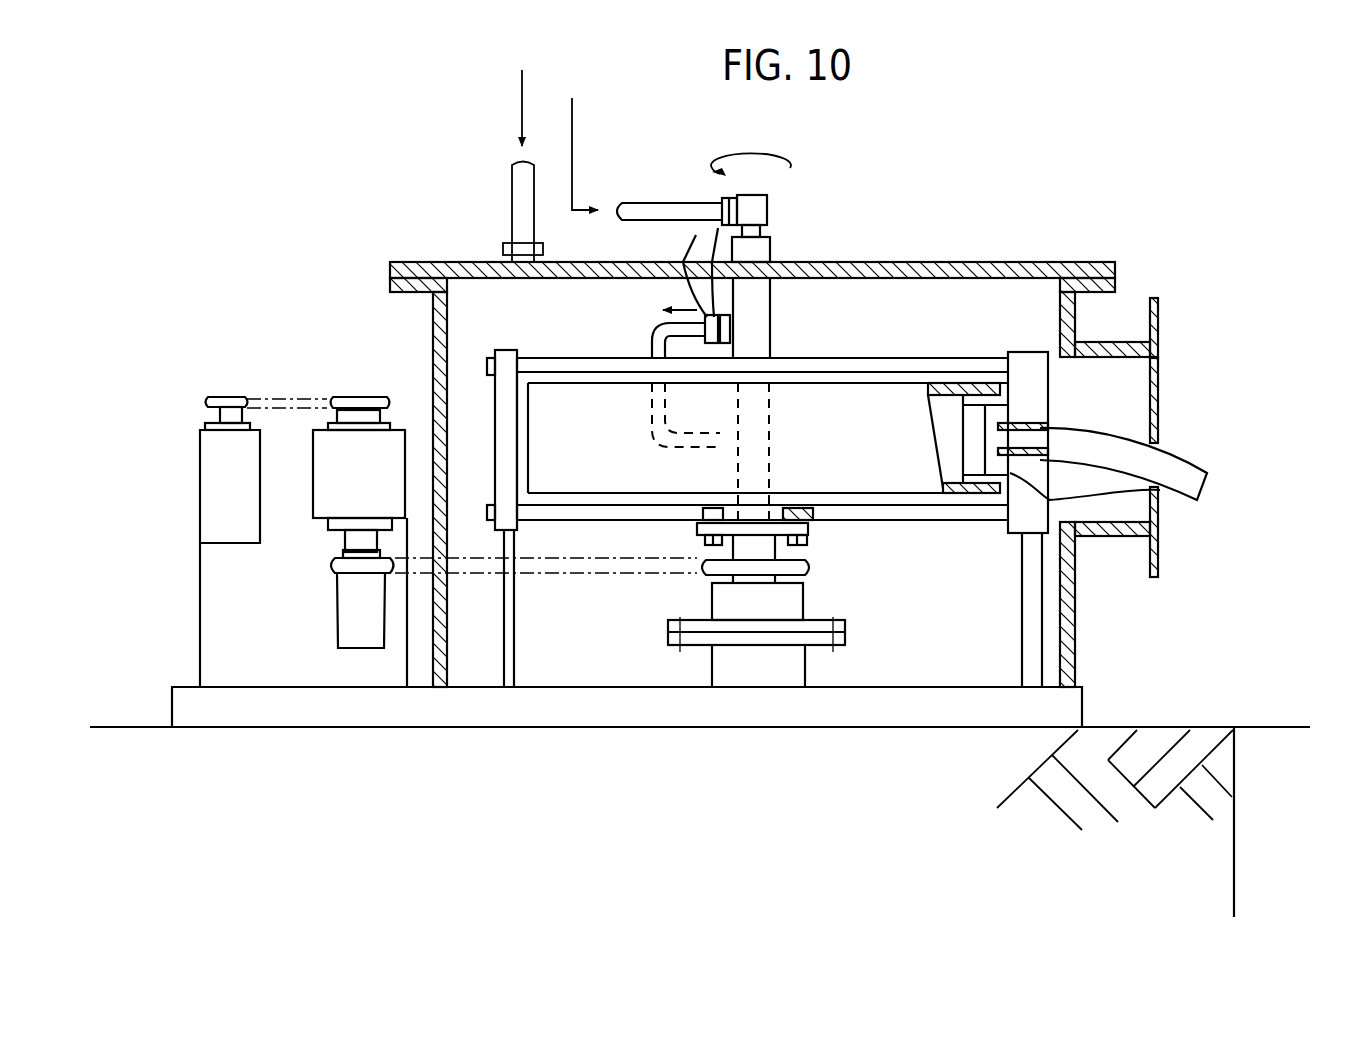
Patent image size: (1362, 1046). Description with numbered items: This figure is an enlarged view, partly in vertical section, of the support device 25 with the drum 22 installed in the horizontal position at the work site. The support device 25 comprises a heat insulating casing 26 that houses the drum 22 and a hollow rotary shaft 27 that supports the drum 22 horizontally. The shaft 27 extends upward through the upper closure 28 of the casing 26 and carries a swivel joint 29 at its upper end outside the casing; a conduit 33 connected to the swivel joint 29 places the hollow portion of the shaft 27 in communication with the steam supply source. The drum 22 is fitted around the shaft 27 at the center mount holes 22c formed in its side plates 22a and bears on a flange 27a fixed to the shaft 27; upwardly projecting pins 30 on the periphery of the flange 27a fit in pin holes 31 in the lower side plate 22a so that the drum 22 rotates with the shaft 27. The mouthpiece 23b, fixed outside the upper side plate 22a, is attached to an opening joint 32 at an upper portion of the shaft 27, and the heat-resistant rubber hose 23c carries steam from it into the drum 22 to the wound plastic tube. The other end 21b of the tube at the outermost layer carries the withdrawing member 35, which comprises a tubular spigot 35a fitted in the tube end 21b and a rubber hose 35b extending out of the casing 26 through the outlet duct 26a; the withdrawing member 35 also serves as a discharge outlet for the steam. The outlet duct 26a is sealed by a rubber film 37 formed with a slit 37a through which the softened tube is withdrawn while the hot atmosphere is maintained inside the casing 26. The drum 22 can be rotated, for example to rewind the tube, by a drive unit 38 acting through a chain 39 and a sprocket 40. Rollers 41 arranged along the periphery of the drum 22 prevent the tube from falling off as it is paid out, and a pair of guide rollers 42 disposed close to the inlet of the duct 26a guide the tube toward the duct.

The other end of the plastic tube 21b is at (936, 360).
The drum 22 is at (620, 520).
The drum side plate 22a is at (980, 513).
The center mount hole 22c is at (772, 368).
The mouthpiece 23b is at (652, 265).
The heat-resistant rubber hose 23c is at (652, 333).
The support device 25 is at (757, 657).
The heat insulating casing 26 is at (437, 345).
The outlet duct 26a is at (1120, 537).
The hollow rotary shaft 27 is at (772, 242).
The flange 27a is at (800, 568).
The upper closure 28 is at (1003, 262).
The swivel joint 29 is at (768, 210).
The pins 30 is at (790, 538).
The pin holes 31 is at (810, 516).
The opening joint 32 is at (718, 226).
The conduit 33 is at (628, 203).
The withdrawing member 35 is at (1292, 432).
The tubular spigot 35a is at (1190, 503).
The rubber hose 35b is at (1185, 468).
The rubber film 37 is at (1159, 366).
The slit 37a is at (1159, 408).
The drive unit 38 is at (304, 422).
The chain 39 is at (468, 567).
The sprocket 40 is at (803, 583).
The rollers 41 is at (502, 417).
The guide rollers 42 is at (1036, 402).